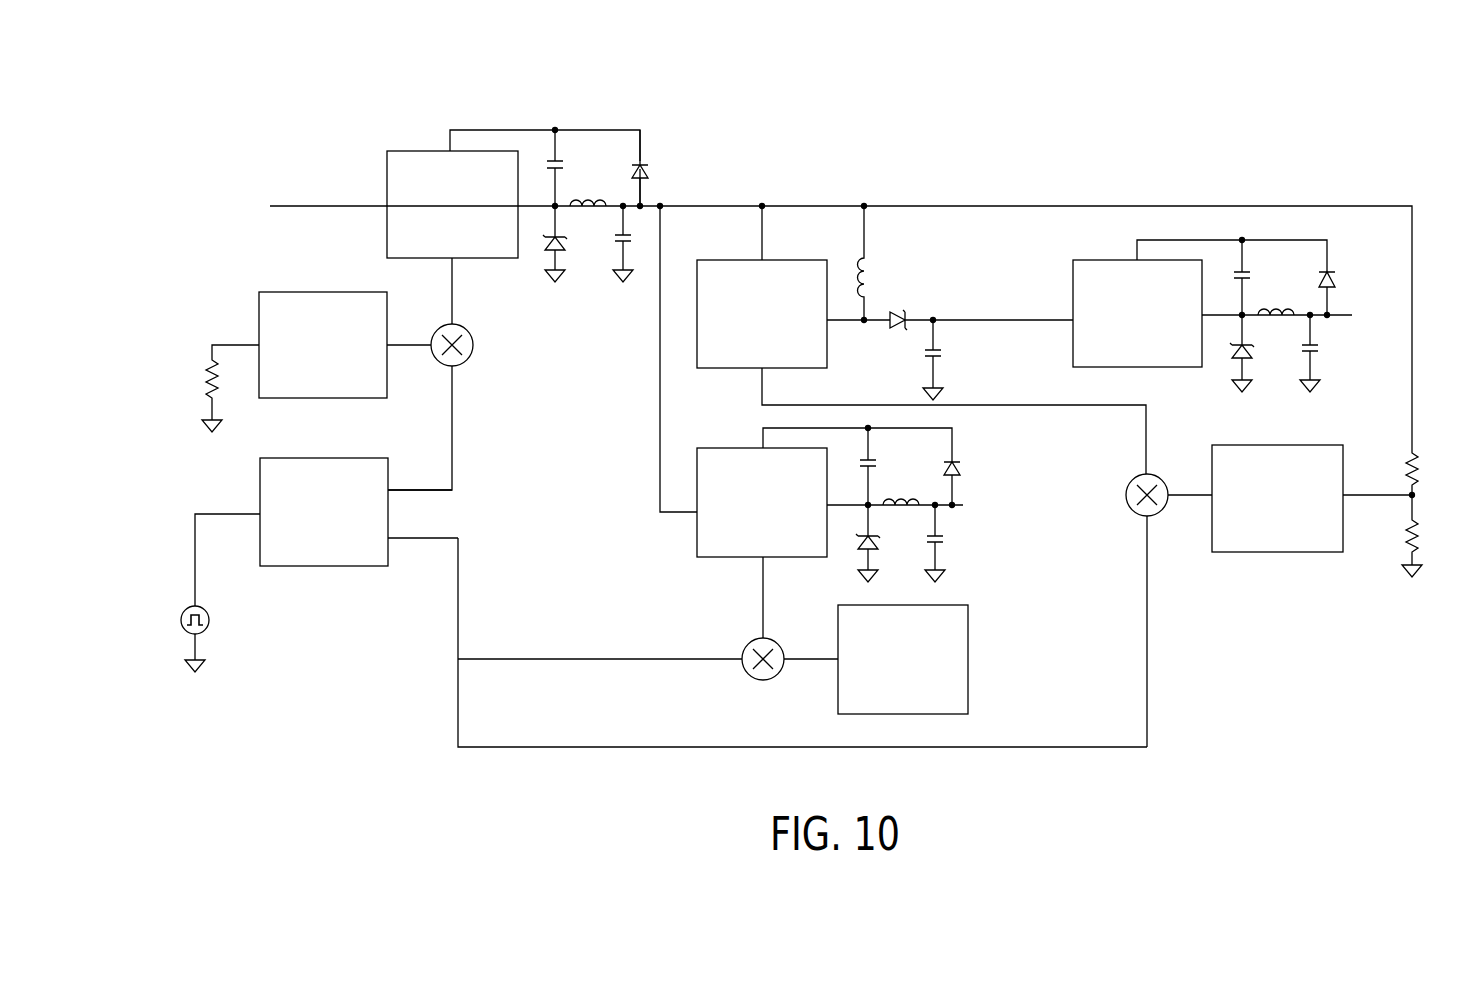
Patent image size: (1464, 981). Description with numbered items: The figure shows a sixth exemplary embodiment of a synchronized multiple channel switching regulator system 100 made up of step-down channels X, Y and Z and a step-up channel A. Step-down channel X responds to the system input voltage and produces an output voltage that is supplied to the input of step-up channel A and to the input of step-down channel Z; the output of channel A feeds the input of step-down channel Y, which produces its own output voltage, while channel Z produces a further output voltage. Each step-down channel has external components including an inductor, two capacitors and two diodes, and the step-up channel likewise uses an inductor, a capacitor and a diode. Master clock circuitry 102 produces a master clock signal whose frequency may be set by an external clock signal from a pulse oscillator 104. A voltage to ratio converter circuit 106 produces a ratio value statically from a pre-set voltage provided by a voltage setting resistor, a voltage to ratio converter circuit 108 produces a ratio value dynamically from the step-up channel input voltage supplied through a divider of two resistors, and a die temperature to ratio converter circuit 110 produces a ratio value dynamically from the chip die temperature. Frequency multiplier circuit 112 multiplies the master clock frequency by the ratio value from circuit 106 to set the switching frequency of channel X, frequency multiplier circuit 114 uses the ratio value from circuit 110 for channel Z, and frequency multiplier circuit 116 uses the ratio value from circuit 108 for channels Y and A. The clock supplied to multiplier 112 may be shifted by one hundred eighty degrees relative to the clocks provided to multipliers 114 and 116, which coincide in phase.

The synchronized multiple channel switching regulator system 100 is at (795, 74).
The master clock circuitry 102 is at (337, 566).
The pulse oscillator 104 is at (181, 623).
The voltage to ratio converter circuit 106 is at (259, 298).
The voltage to ratio converter circuit 108 is at (1278, 552).
The die temperature to ratio converter circuit 110 is at (968, 655).
The frequency multiplier circuit 112 is at (473, 350).
The frequency multiplier circuit 114 is at (748, 672).
The frequency multiplier circuit 116 is at (1126, 497).